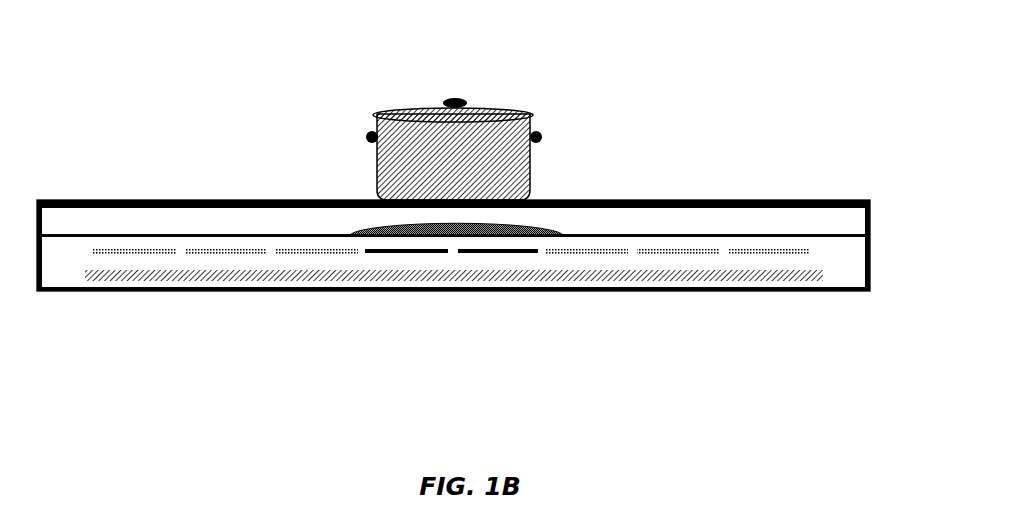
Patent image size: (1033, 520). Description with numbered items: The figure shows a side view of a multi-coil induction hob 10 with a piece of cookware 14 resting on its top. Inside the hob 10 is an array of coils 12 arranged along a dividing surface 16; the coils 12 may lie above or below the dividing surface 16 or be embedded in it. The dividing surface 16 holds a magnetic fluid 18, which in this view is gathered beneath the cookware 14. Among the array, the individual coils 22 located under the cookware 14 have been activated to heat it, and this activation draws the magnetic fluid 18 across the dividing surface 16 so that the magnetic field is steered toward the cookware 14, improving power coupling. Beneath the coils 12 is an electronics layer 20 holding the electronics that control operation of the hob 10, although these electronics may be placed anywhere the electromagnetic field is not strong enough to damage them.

The hob 10 is at (828, 200).
The coils 12 is at (828, 253).
The cookware 14 is at (418, 103).
The dividing surface 16 is at (218, 235).
The magnetic fluid 18 is at (532, 227).
The electronics layer 20 is at (702, 272).
The individual coils 22 is at (495, 248).